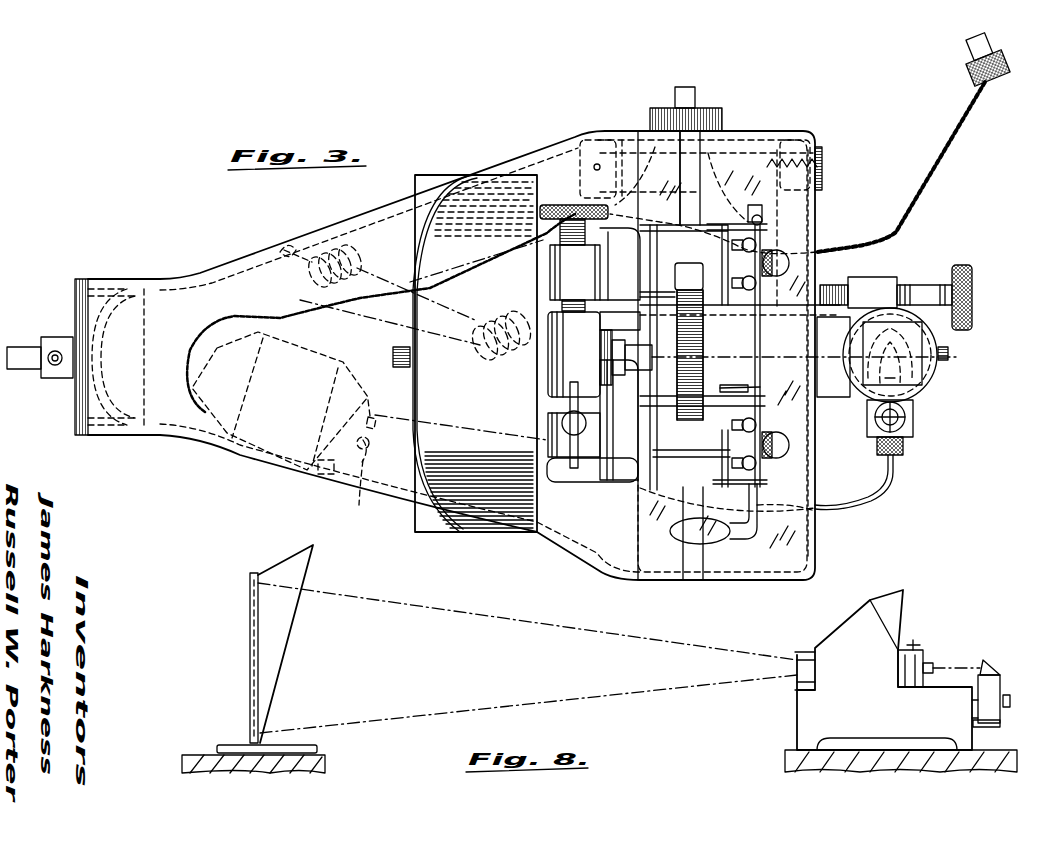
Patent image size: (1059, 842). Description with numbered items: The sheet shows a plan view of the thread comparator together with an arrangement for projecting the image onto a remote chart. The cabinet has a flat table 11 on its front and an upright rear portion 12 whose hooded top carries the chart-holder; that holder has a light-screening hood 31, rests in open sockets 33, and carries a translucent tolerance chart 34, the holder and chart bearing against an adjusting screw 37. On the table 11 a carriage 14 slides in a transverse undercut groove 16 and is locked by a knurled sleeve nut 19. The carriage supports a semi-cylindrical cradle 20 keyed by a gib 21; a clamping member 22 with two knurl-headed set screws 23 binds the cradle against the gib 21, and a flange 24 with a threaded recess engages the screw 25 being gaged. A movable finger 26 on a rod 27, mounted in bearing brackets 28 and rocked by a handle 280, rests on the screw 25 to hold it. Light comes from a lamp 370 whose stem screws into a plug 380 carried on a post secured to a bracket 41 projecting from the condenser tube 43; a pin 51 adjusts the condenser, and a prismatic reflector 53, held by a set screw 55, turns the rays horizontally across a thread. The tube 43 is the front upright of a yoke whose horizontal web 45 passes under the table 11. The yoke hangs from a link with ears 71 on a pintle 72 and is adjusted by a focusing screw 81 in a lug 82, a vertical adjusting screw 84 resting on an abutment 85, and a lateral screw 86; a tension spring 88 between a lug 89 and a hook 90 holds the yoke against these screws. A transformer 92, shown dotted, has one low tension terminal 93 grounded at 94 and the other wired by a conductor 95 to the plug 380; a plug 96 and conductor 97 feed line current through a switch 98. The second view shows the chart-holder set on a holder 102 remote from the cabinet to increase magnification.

In FIG. 3, the table 11 is at (807, 553).
In FIG. 8, the upright rear portion 12 is at (901, 681).
In FIG. 3, the carriage 14 is at (822, 160).
In FIG. 3, the undercut groove 16 is at (693, 147).
In FIG. 3, the sleeve nut 19 is at (782, 260).
In FIG. 3, the cradle 20 is at (650, 264).
In FIG. 3, the gib 21 is at (650, 236).
In FIG. 3, the clamping member 22 is at (705, 232).
In FIG. 3, the set screws 23 is at (752, 246).
In FIG. 3, the flange 24 is at (663, 300).
In FIG. 3, the screw 25 is at (683, 390).
In FIG. 3, the movable finger 26 is at (737, 387).
In FIG. 3, the rod 27 is at (810, 520).
In FIG. 3, the bearing brackets 28 is at (752, 232).
In FIG. 3, the hood 31 is at (461, 353).
In FIG. 8, the hood 31 is at (895, 610).
In FIG. 3, the open sockets 33 is at (563, 470).
In FIG. 3, the tolerance chart 34 is at (417, 520).
In FIG. 3, the adjusting screw 37 is at (393, 350).
In FIG. 3, the bracket 41 is at (917, 417).
In FIG. 3, the condenser tube 43 is at (933, 342).
In FIG. 8, the condenser tube 43 is at (1000, 686).
In FIG. 3, the horizontal web 45 is at (630, 395).
In FIG. 3, the pin 51 is at (905, 425).
In FIG. 8, the prismatic reflector 53 is at (998, 668).
In FIG. 3, the set screw 55 is at (948, 350).
In FIG. 3, the ears 71 is at (597, 140).
In FIG. 3, the pintle 72 is at (618, 195).
In FIG. 3, the focusing screw 81 is at (967, 277).
In FIG. 8, the focusing screw 81 is at (1010, 700).
In FIG. 3, the lug 82 is at (883, 277).
In FIG. 3, the adjusting screw 84 is at (580, 470).
In FIG. 8, the adjusting screw 84 is at (917, 645).
In FIG. 8, the abutment 85 is at (912, 683).
In FIG. 3, the adjusting screw 86 is at (546, 205).
In FIG. 3, the tension spring 88 is at (360, 262).
In FIG. 3, the lug 89 is at (510, 362).
In FIG. 3, the hook 90 is at (282, 248).
In FIG. 3, the transformer 92 is at (258, 436).
In FIG. 3, the low tension terminal 93 is at (359, 466).
In FIG. 3, the ground connection 94 is at (329, 474).
In FIG. 3, the conductor 95 is at (887, 488).
In FIG. 3, the plug 96 is at (985, 50).
In FIG. 3, the conductor 97 is at (778, 157).
In FIG. 3, the switch 98 is at (692, 112).
In FIG. 8, the holder 102 is at (230, 745).
In FIG. 3, the handle 280 is at (713, 532).
In FIG. 3, the source of light 370 is at (907, 367).
In FIG. 3, the plug 380 is at (905, 447).